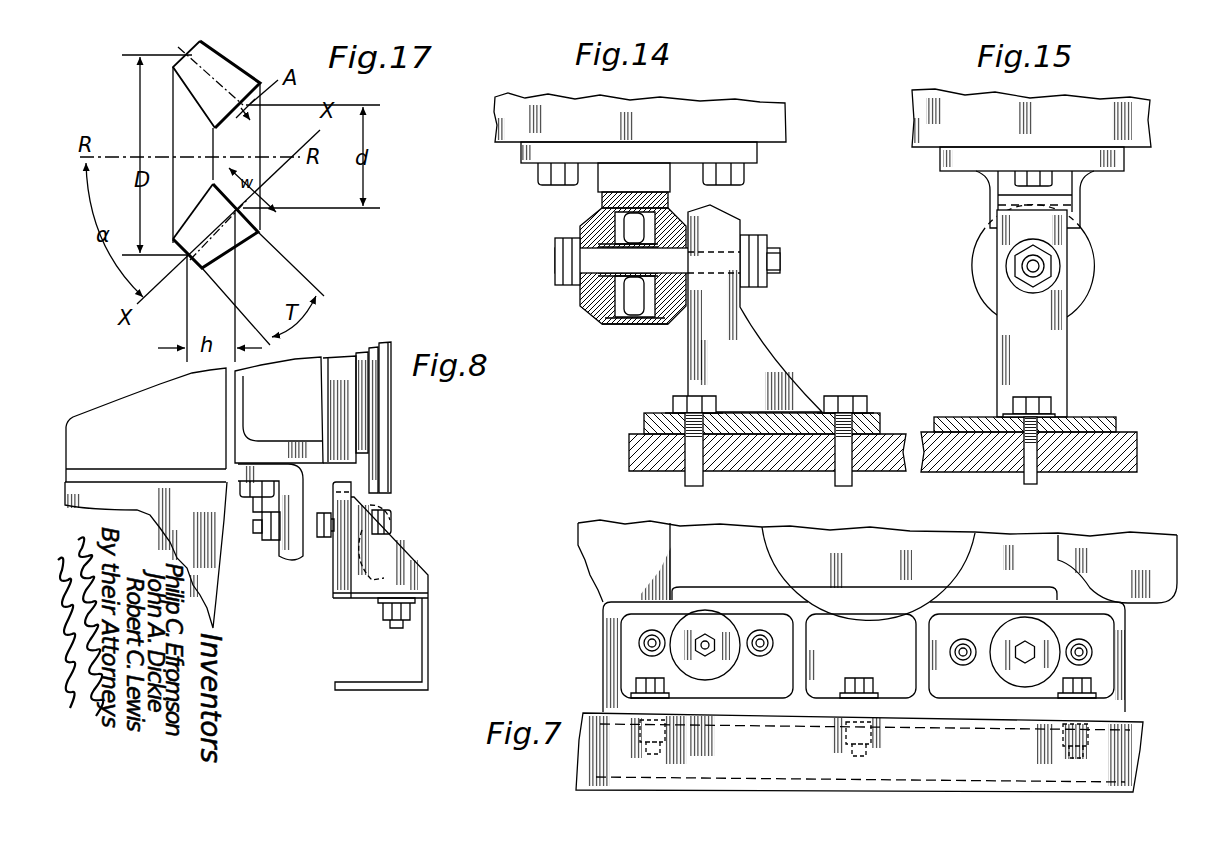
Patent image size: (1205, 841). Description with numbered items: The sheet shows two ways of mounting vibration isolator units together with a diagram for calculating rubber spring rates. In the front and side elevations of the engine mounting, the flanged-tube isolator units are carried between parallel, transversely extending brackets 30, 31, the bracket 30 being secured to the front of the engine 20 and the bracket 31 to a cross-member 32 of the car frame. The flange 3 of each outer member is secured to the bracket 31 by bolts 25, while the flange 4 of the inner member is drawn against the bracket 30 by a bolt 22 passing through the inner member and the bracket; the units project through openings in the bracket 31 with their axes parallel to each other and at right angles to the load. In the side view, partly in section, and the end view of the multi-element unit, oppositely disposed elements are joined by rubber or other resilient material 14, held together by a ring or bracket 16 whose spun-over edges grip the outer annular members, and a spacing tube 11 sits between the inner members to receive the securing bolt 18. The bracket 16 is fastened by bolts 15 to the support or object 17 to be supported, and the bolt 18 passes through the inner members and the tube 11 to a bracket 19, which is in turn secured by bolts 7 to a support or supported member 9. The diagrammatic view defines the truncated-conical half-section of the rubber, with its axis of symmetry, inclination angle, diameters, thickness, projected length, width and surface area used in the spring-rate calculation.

In FIG. 8, the flange of outer tube 3 is at (335, 566).
In FIG. 8, the flange of inner tube 4 is at (322, 488).
In FIG. 14, the bolts 7 is at (855, 396).
In FIG. 15, the bolts 7 is at (1036, 395).
In FIG. 14, the support or supported member 9 is at (964, 463).
In FIG. 15, the support or supported member 9 is at (970, 458).
In FIG. 14, the spacing tube 11 is at (600, 312).
In FIG. 14, the resilient material 14 is at (590, 300).
In FIG. 14, the bolts 15 is at (539, 178).
In FIG. 15, the bolts 15 is at (1043, 186).
In FIG. 14, the ring or bracket 16 is at (670, 192).
In FIG. 14, the support or object to be supported 17 is at (762, 128).
In FIG. 15, the support or object to be supported 17 is at (949, 132).
In FIG. 14, the securing bolt 18 is at (567, 261).
In FIG. 15, the securing bolt 18 is at (1028, 266).
In FIG. 14, the bracket 19 is at (757, 378).
In FIG. 15, the bracket 19 is at (1012, 340).
In FIG. 8, the engine 20 is at (146, 498).
In FIG. 8, the bolt 22 is at (390, 523).
In FIG. 7, the bolt 22 is at (712, 650).
In FIG. 8, the bolts 25 is at (322, 533).
In FIG. 7, the bolts 25 is at (760, 636).
In FIG. 8, the bracket 30 is at (293, 558).
In FIG. 8, the bracket 31 is at (348, 583).
In FIG. 7, the bracket 31 is at (613, 654).
In FIG. 8, the cross-member 32 is at (428, 653).
In FIG. 7, the cross-member 32 is at (720, 784).